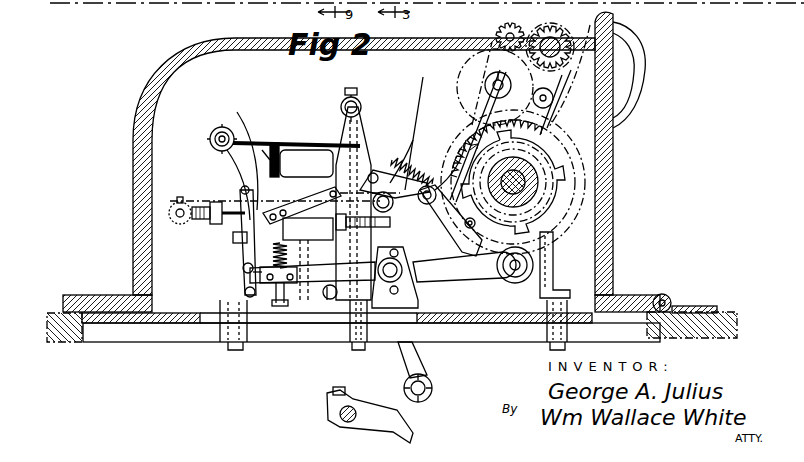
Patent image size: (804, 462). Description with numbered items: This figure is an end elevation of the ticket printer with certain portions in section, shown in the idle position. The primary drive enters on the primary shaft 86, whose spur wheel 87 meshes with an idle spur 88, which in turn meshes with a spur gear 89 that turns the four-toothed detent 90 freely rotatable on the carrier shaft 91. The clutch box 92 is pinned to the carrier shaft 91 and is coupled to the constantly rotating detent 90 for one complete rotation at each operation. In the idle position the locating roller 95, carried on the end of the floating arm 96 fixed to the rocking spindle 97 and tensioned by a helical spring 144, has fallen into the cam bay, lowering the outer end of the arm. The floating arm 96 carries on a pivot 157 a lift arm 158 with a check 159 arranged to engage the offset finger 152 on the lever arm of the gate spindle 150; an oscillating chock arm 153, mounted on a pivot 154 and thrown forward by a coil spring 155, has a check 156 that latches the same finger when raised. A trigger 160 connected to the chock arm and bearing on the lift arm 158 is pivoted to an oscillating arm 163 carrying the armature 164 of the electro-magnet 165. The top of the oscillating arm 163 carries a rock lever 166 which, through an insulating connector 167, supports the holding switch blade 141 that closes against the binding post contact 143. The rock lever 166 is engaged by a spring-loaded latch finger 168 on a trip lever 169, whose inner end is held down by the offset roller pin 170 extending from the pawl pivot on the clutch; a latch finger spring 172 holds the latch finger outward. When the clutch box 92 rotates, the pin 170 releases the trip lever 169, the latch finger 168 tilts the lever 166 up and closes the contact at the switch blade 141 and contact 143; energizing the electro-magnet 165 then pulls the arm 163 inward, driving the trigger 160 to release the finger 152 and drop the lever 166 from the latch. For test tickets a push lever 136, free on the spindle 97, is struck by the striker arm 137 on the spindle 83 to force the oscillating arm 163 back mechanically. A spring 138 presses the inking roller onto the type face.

The spindle 83 is at (353, 395).
The primary shaft 86 is at (560, 48).
The spur wheel 87 is at (565, 65).
The idle spur 88 is at (480, 56).
The spur gear 89 is at (548, 128).
The four-toothed detent 90 is at (560, 172).
The carrier shaft 91 is at (530, 184).
The clutch box 92 is at (477, 128).
The locating roller 95 is at (542, 262).
The floating arm 96 is at (472, 272).
The rocking spindle 97 is at (392, 312).
The push lever 136 is at (432, 363).
The striker arm 137 is at (372, 408).
The spring 138 is at (213, 130).
The holding switch blade 141 is at (337, 147).
The binding post contact 143 is at (342, 114).
The helical spring 144 is at (270, 253).
The spindle 150 is at (168, 210).
The offset finger 152 is at (233, 184).
The oscillating chock arm 153 is at (232, 242).
The pivot 154 is at (300, 302).
The coil spring 155 is at (242, 279).
The check 156 is at (216, 138).
The pivot 157 is at (253, 272).
The lift arm 158 is at (247, 252).
The check 159 is at (230, 188).
The trigger 160 is at (262, 150).
The oscillating arm 163 is at (340, 227).
The armature 164 is at (370, 140).
The electro-magnet 165 is at (302, 213).
The rock lever 166 is at (268, 158).
The insulating connector 167 is at (301, 160).
The latch finger 168 is at (382, 165).
The trip lever 169 is at (473, 265).
The offset roller pin 170 is at (476, 224).
The latch finger spring 172 is at (420, 120).